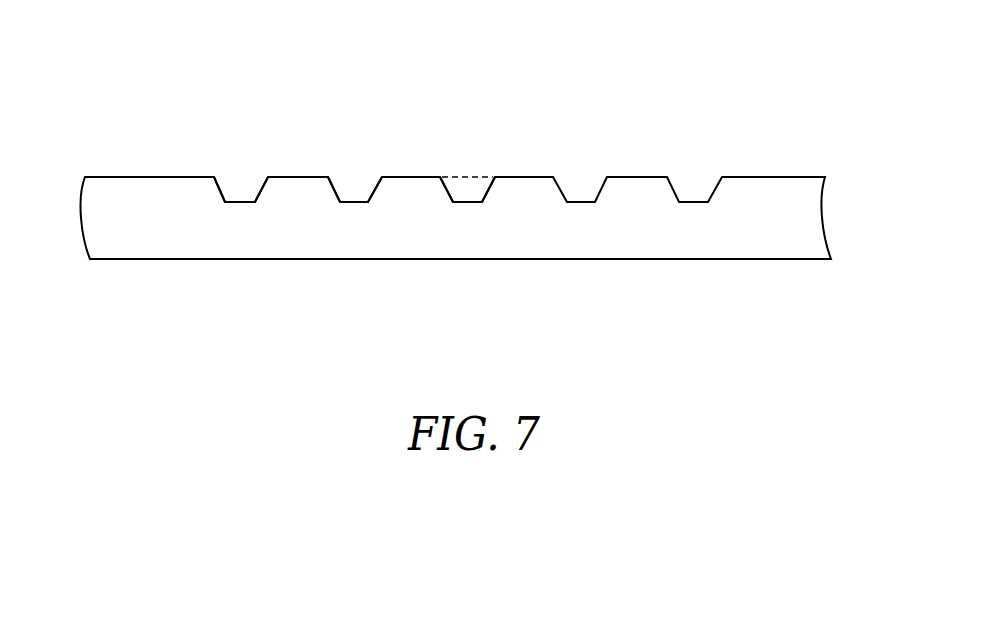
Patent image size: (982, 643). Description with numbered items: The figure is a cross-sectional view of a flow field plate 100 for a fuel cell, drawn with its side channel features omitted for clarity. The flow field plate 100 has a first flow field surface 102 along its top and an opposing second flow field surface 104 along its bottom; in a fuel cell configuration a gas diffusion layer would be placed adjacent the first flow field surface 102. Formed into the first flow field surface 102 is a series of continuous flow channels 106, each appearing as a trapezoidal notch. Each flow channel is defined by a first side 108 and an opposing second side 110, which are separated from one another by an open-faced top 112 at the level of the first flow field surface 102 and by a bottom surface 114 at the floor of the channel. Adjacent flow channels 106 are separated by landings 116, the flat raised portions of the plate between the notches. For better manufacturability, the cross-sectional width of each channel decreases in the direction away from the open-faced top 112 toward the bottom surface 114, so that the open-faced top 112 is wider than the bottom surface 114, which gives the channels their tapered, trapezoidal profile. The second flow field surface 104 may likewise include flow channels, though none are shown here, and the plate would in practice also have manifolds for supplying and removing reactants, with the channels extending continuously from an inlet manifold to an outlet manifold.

The flow field plate 100 is at (145, 63).
The first flow field surface 102 is at (147, 176).
The second flow field surface 104 is at (140, 261).
The continuous flow channels 106 is at (242, 177).
The first side 108 is at (487, 190).
The second side 110 is at (445, 190).
The open-faced top 112 is at (469, 176).
The bottom surface 114 is at (470, 203).
The landings 116 is at (296, 185).